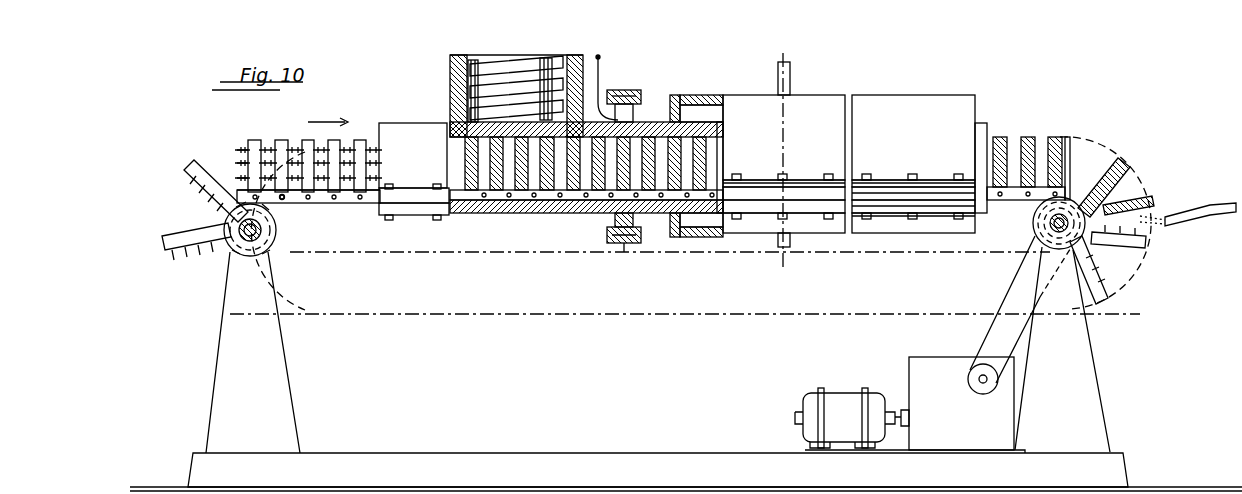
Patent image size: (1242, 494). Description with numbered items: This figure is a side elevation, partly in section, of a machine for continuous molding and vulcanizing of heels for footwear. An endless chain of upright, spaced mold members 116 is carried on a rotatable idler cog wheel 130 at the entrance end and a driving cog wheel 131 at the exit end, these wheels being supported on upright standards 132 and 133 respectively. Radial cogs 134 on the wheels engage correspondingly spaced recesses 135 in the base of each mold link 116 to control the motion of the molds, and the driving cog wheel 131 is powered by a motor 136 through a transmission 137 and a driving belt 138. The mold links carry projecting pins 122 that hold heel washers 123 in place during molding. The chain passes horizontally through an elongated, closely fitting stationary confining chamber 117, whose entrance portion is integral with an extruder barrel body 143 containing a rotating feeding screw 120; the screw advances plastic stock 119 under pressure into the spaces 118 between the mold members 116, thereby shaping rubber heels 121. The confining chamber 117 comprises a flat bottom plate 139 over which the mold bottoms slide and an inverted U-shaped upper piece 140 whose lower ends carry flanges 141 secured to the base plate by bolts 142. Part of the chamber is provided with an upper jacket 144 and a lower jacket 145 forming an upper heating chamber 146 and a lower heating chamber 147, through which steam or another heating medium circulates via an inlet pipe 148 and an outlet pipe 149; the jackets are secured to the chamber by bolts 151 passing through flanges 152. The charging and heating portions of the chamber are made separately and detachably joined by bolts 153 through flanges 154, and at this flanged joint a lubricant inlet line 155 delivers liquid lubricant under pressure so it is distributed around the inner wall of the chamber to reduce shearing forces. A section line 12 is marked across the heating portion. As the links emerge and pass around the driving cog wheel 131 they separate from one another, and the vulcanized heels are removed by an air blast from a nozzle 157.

The section line 12- 12 is at (796, 82).
The mold members 116 is at (283, 140).
The confining chamber 117 is at (437, 115).
The spaces 118 is at (318, 204).
The plastic stock 119 is at (458, 84).
The feeding screw 120 is at (601, 58).
The rubber heels 121 is at (1000, 137).
The projecting pins 122 is at (232, 148).
The heel washers 123 is at (243, 148).
The idler cog wheel 130 is at (258, 256).
The driving cog wheel 131 is at (1032, 234).
The upright standard 132 is at (272, 358).
The upright standard 133 is at (1085, 350).
The radial cogs 134 is at (268, 255).
The recesses 135 is at (290, 204).
The motor 136 is at (840, 398).
The transmission 137 is at (915, 405).
The driving belt 138 is at (985, 330).
The bottom plate 139 is at (412, 215).
The inverted U-shaped upper piece 140 is at (392, 123).
The flanges 141 is at (922, 188).
The bolts 142 is at (386, 216).
The extruder barrel body 143 is at (452, 60).
The upper jacket 144 is at (882, 96).
The lower jacket 145 is at (862, 232).
The upper heating chamber 146 is at (705, 105).
The lower heating chamber 147 is at (695, 238).
The inlet pipe 148 is at (792, 72).
The outlet pipe 149 is at (776, 245).
The bolts 151 is at (790, 172).
The flanges 152 is at (862, 173).
The bolts 153 is at (606, 240).
The flanges 154 is at (624, 252).
The lubricant inlet line 155 is at (600, 95).
The nozzle 157 is at (1196, 222).